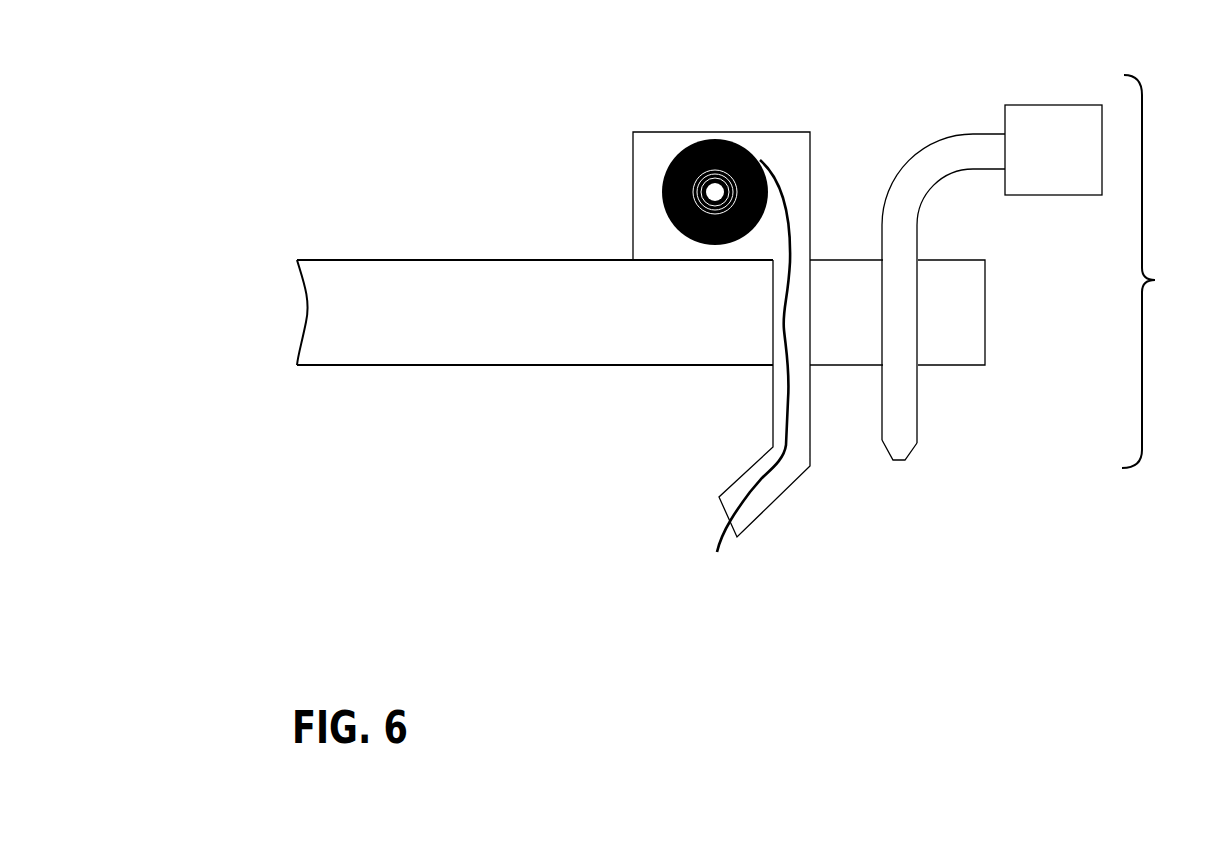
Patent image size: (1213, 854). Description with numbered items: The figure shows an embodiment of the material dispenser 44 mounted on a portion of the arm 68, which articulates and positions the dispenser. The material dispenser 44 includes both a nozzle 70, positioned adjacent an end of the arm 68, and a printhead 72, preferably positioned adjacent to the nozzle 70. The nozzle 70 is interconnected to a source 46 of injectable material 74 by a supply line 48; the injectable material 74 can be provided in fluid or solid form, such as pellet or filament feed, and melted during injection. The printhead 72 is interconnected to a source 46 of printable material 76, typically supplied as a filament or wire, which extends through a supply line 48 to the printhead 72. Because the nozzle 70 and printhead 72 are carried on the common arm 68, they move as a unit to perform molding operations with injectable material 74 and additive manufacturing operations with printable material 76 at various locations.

The material dispenser 44 is at (1157, 280).
The source 46 is at (689, 129).
The supply line 48 is at (795, 322).
The arm 68 is at (447, 277).
The nozzle 70 is at (918, 449).
The printhead 72 is at (791, 491).
The injectable material 74 is at (1081, 130).
The printable material 76 is at (763, 150).